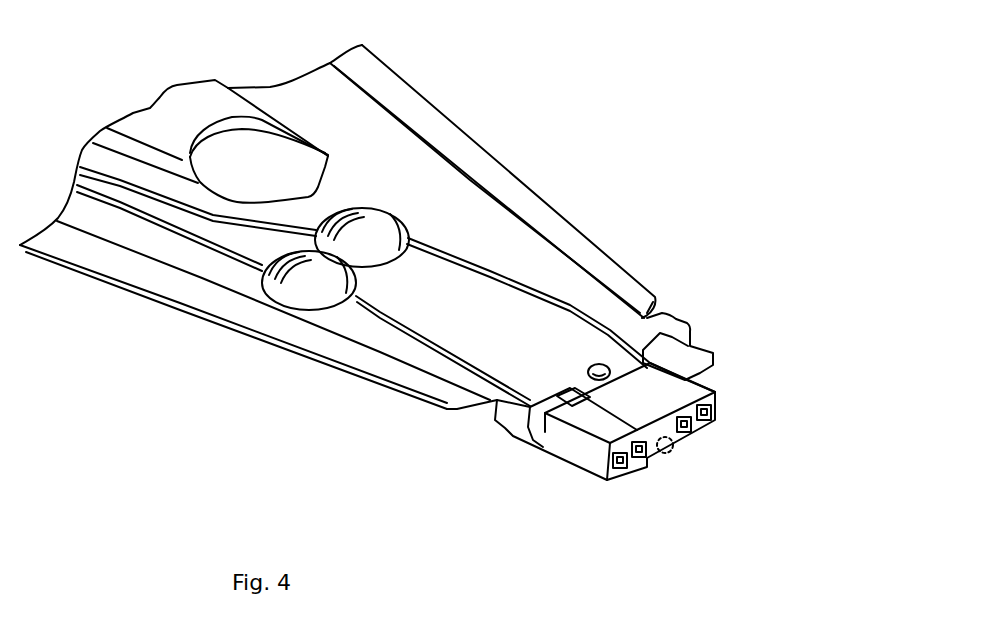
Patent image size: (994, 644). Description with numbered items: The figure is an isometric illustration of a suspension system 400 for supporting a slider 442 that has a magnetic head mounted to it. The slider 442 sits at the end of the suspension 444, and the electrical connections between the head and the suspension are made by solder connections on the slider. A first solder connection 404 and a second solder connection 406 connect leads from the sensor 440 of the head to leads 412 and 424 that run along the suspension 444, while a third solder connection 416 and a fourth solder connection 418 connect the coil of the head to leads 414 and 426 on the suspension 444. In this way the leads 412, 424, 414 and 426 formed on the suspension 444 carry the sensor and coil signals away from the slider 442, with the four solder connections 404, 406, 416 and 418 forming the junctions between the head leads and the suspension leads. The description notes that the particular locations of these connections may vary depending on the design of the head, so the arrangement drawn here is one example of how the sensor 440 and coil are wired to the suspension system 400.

The suspension system 400 is at (807, 103).
The suspension 444 is at (514, 163).
The lead 414 is at (570, 305).
The lead 424 is at (430, 331).
The lead 426 is at (490, 273).
The lead 412 is at (382, 322).
The third solder connection 416 is at (710, 410).
The fourth solder connection 418 is at (690, 430).
The sensor 440 is at (673, 455).
The second solder connection 406 is at (633, 465).
The first solder connection 404 is at (610, 463).
The slider 442 is at (553, 472).